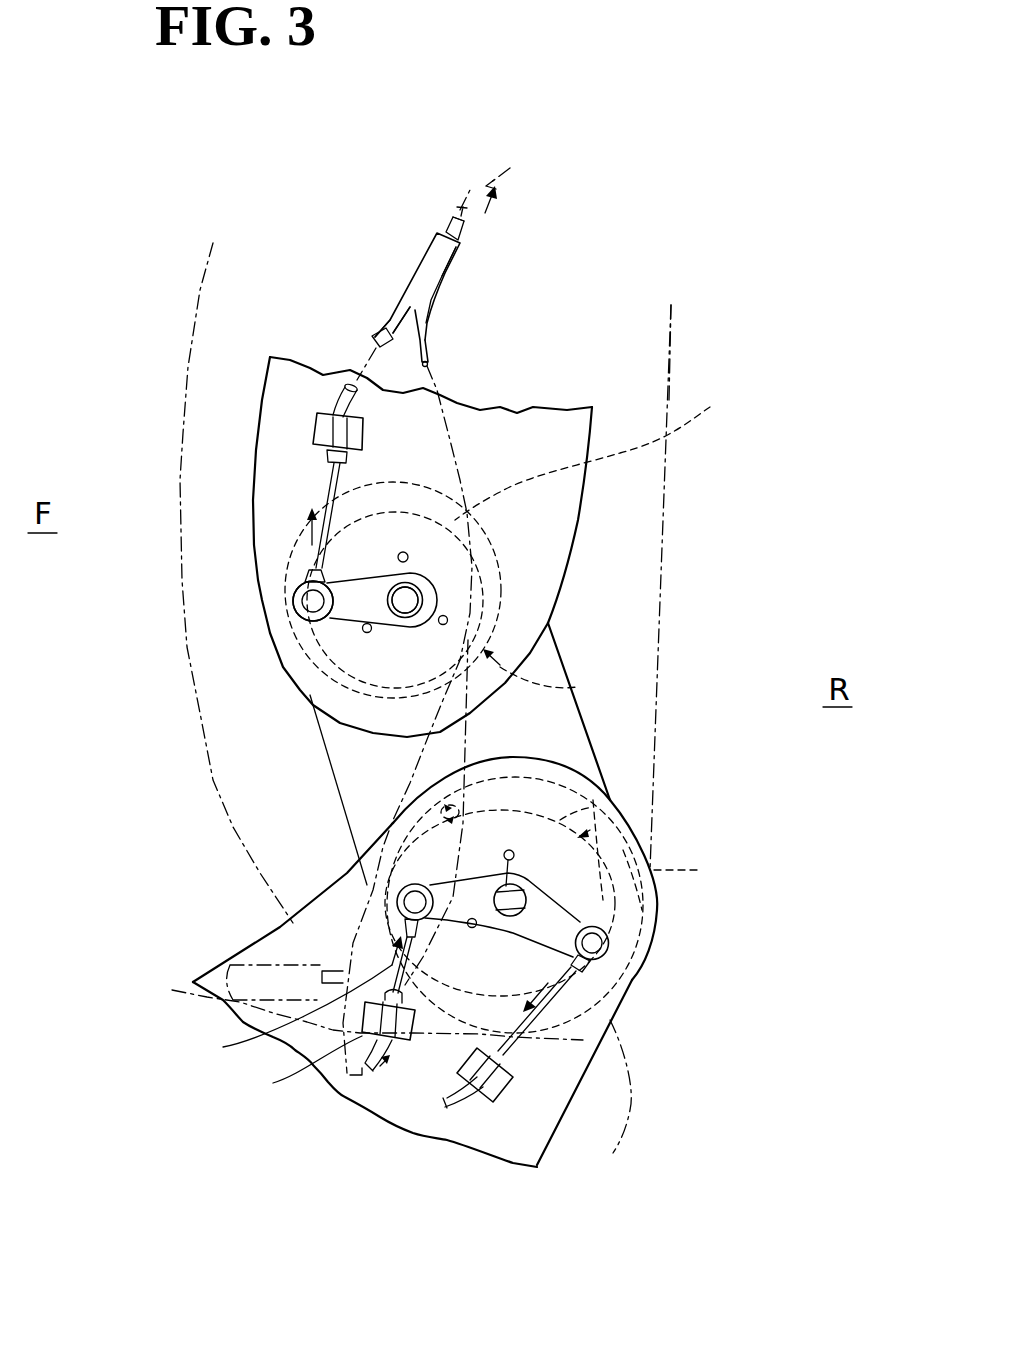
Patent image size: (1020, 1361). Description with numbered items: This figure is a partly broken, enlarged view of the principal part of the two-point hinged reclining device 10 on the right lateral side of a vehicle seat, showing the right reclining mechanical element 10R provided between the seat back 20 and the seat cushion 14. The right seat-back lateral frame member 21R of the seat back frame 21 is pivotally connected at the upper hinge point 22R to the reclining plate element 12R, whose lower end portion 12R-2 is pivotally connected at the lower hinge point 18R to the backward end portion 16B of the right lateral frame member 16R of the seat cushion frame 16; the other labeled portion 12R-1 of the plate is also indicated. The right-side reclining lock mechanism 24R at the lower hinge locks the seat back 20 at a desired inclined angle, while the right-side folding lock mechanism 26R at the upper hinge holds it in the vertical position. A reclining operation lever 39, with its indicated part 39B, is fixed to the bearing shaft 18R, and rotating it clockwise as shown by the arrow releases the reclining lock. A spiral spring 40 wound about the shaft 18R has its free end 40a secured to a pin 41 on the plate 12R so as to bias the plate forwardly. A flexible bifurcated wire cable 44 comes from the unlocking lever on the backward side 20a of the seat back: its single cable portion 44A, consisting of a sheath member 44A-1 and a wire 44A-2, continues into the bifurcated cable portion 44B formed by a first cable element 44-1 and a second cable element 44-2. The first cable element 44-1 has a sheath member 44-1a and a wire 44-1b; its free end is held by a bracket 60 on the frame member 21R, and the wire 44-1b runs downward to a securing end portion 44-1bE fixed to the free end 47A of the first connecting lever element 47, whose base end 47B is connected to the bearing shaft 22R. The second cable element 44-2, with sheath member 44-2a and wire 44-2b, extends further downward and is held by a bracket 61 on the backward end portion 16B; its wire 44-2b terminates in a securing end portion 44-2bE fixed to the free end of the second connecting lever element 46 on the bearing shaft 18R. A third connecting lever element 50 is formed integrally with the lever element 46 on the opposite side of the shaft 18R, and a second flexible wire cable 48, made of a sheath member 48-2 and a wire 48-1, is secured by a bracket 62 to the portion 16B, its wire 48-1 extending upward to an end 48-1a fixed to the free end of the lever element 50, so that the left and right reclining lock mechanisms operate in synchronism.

The reclining device 10 is at (750, 236).
The right reclining mechanical element 10R is at (695, 501).
The reclining plate element 12R is at (583, 737).
The side frame upper portion 12R-1 is at (617, 445).
The lower end portion of reclining plate element 12R-2 is at (721, 868).
The seat cushion 14 is at (645, 1126).
The seat cushion frame 16 is at (176, 966).
The backward end portion of seat cushion lateral frame member 16B is at (655, 930).
The right lateral frame member of seat cushion frame 16R is at (625, 1000).
The lower hinge point / bearing shaft 18R is at (543, 757).
The seat back 20 is at (668, 660).
The backward side of seat back 20a is at (673, 363).
The seat back frame 21 is at (598, 497).
The right seat-back lateral frame member 21R is at (582, 557).
The upper hinge point / bearing shaft 22R is at (403, 604).
The right-side reclining lock mechanism 24R is at (623, 807).
The right-side folding lock mechanism 26R is at (564, 677).
The reclining operation lever 39 is at (273, 965).
The lock mechanism bracket 39B is at (652, 847).
The spiral spring 40 is at (433, 820).
The free end of spiral spring 40a is at (438, 806).
The pin 41 is at (508, 850).
The flexible bifurcated wire cable 44 is at (458, 267).
The single cable portion 44A is at (416, 265).
The flexible sheath member 44A-1 is at (477, 243).
The wire 44A-2 is at (452, 216).
The bifurcated cable portion 44B is at (512, 358).
The first cable element 44-1 is at (353, 373).
The flexible sheath member of first cable element 44-1a is at (390, 313).
The wire of first cable element 44-1b is at (380, 333).
The securing end portion 44-1bE is at (293, 605).
The second cable element 44-2 is at (358, 342).
The flexible sheath member of second cable element 44-2a is at (440, 320).
The wire of second cable element 44-2b is at (440, 350).
The securing end portion 44-2bE is at (607, 963).
The second connecting lever element 46 is at (565, 910).
The first connecting lever element 47 is at (370, 585).
The free end of first connecting lever element 47A is at (350, 615).
The base end of first connecting lever element 47B is at (433, 599).
The second flexible wire cable 48 is at (367, 1074).
The wire of second flexible wire cable 48-1 is at (268, 1017).
The end of wire 48-1a is at (398, 900).
The sheath member of second flexible wire cable 48-2 is at (277, 1072).
The third connecting lever element 50 is at (433, 883).
The bracket 60 is at (315, 427).
The bracket 61 is at (508, 1105).
The bracket 62 is at (418, 1042).